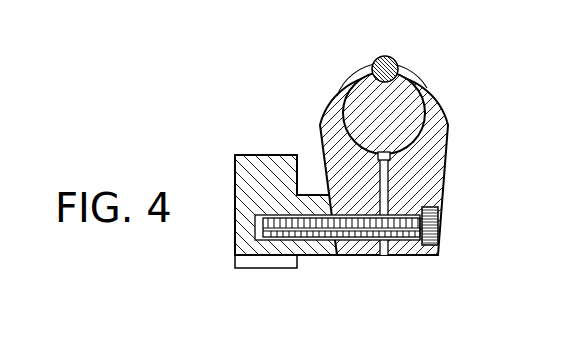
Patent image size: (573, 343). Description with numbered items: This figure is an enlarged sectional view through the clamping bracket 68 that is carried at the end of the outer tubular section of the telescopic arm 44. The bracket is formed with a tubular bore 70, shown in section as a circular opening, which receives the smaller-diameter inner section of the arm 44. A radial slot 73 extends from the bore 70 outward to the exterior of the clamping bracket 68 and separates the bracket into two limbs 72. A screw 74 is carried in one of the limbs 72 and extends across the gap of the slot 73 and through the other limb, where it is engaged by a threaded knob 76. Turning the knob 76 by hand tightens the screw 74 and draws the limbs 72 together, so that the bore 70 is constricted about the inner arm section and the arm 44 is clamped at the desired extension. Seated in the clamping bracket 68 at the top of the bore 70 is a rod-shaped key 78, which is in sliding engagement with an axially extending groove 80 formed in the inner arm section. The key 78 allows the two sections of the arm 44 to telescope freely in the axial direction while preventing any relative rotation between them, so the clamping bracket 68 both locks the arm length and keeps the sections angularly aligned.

The arm 44 is at (403, 119).
The clamping bracket 68 is at (337, 64).
The tubular bore 70 is at (414, 138).
The limbs 72 is at (400, 256).
The radial slot 73 is at (383, 177).
The screw 74 is at (407, 215).
The threaded knob 76 is at (277, 170).
The rod-shaped key 78 is at (379, 58).
The axially extending groove 80 is at (393, 63).